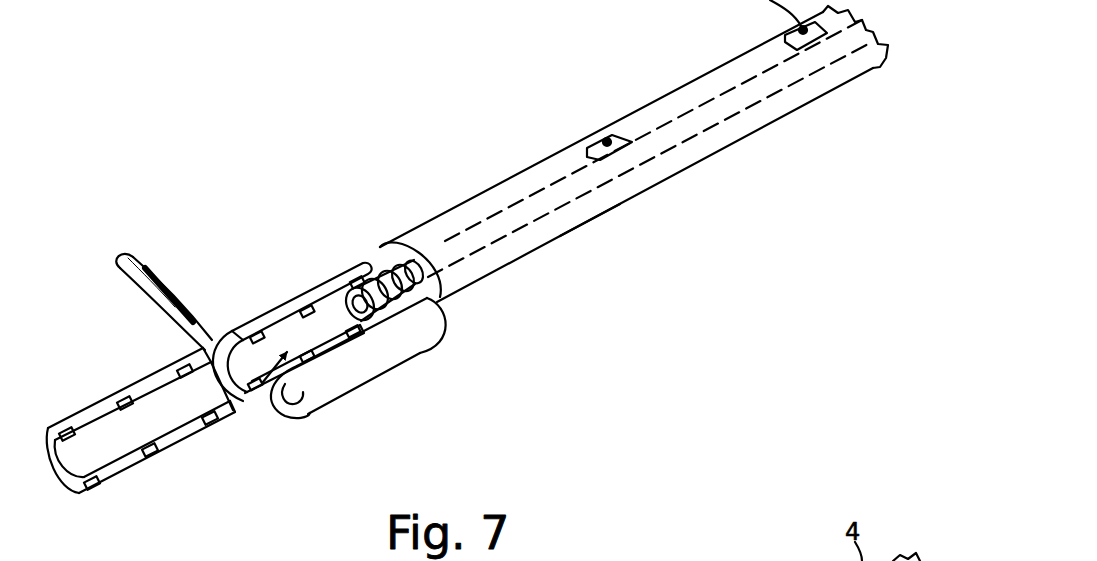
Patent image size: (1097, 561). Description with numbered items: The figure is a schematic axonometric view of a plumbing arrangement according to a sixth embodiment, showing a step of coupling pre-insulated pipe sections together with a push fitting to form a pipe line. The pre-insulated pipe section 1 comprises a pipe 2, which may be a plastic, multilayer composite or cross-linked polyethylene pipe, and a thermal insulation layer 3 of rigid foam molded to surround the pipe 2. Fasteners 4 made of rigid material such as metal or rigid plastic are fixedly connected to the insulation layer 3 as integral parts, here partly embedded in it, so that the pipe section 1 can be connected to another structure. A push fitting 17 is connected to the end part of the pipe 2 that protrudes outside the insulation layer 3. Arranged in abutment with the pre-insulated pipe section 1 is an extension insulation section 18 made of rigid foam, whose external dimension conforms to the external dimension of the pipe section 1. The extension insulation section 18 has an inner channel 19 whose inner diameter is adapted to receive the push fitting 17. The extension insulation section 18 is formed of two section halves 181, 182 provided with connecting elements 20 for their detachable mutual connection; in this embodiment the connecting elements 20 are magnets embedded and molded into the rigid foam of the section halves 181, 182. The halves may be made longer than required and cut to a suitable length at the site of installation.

The pre-insulated pipe section 1 is at (527, 174).
The pipe 2 is at (506, 240).
The thermal insulation layer 3 is at (558, 236).
The fastener 4 is at (607, 138).
The push fitting 17 is at (377, 262).
The extension insulation section 18 is at (245, 242).
The section half 181 is at (305, 310).
The section half 182 is at (353, 367).
The inner channel 19 is at (247, 395).
The connecting element 20 is at (247, 322).